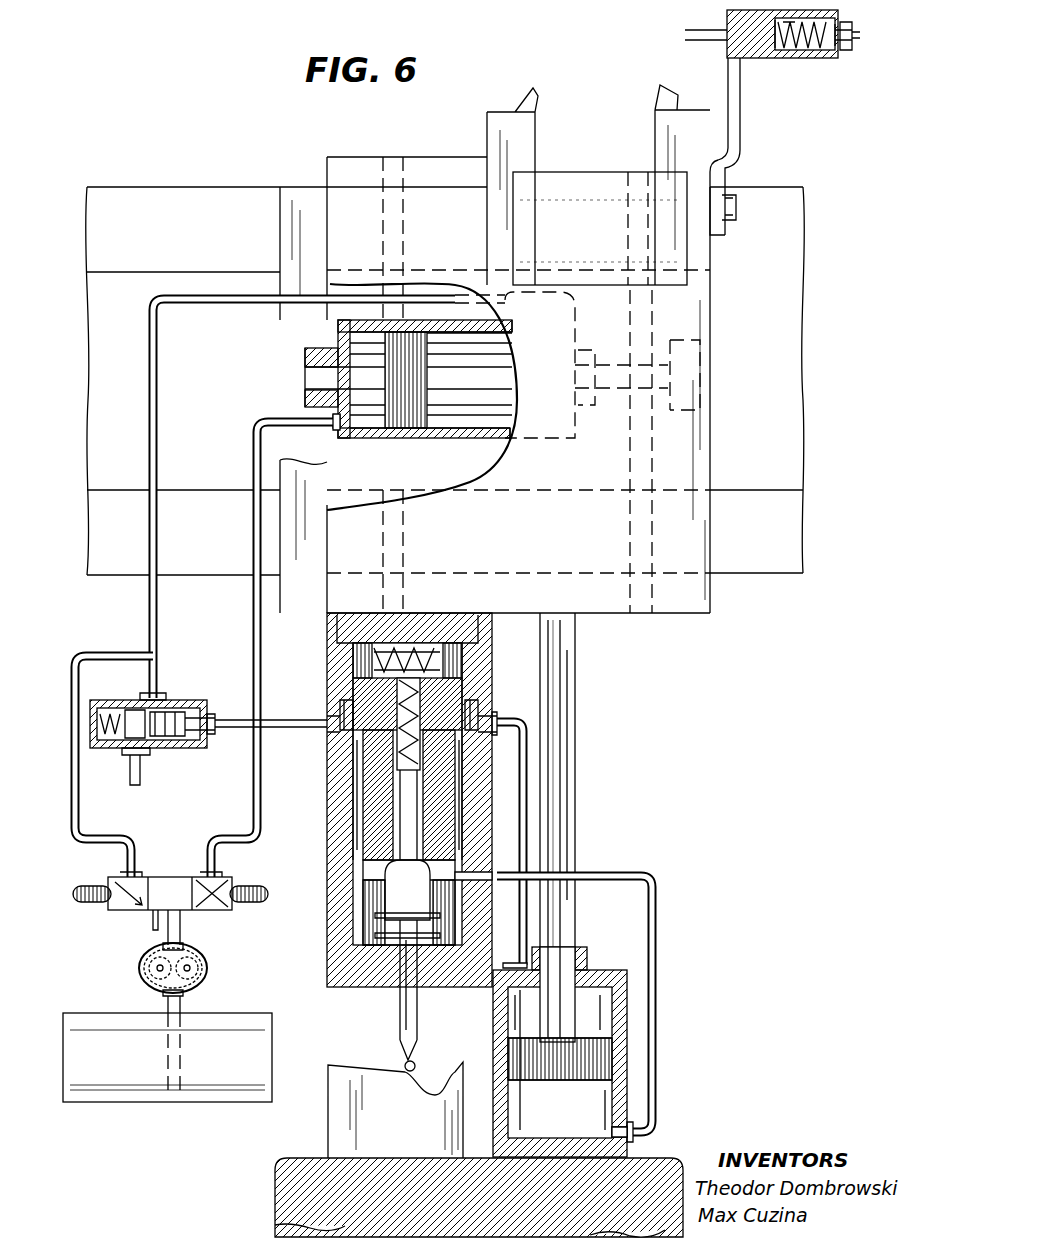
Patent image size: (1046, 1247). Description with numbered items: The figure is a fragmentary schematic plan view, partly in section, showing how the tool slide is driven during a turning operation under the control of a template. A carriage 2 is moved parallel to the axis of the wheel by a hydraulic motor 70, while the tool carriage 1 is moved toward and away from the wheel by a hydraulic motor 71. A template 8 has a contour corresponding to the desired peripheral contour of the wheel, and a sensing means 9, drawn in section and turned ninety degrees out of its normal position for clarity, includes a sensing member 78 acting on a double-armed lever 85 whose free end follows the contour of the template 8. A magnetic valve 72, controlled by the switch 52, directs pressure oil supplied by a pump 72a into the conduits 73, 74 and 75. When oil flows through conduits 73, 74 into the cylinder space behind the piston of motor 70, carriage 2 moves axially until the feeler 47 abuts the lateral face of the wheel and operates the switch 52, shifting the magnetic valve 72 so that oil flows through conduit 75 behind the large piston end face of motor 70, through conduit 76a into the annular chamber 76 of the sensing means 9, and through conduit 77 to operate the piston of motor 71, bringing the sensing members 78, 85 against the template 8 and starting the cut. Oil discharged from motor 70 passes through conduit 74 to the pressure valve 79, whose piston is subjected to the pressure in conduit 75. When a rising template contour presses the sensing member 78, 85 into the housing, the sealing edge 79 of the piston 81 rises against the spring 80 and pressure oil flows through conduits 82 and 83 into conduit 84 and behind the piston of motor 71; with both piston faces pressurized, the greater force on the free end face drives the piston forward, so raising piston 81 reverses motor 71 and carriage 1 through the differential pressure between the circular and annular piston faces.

The tool carriage 1 is at (440, 172).
The carriage 2 is at (684, 610).
The template 8 is at (335, 1116).
The sensing means 9 is at (408, 822).
The feeler 47 is at (722, 38).
The switch 52 is at (845, 60).
The hydraulic motor 70 is at (393, 440).
The hydraulic motor 71 is at (605, 1058).
The magnetic valve 72 is at (113, 912).
The pump 72a is at (208, 968).
The conduit 73 is at (80, 797).
The conduit 74 is at (158, 392).
The conduit 75 is at (272, 606).
The annular chamber 76 is at (340, 706).
The conduit 76a is at (273, 732).
The conduit 77 is at (520, 800).
The sensing member 78 is at (404, 1003).
The pressure valve / sealing edge 79 is at (470, 712).
The spring 80 is at (428, 655).
The piston 81 is at (440, 680).
The conduit 82 is at (370, 762).
The conduit 83 is at (393, 832).
The conduit 84 is at (640, 870).
The double-armed lever 85 is at (418, 1068).